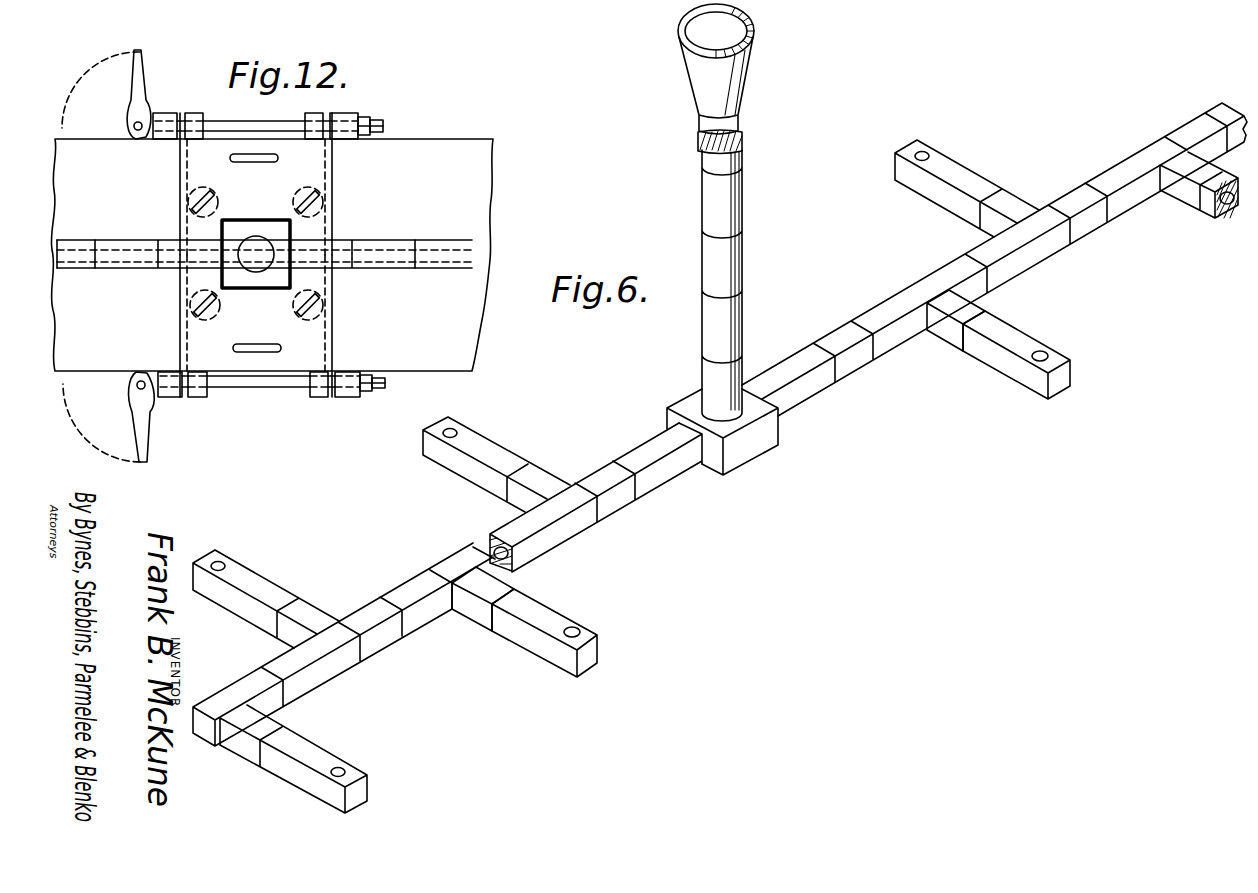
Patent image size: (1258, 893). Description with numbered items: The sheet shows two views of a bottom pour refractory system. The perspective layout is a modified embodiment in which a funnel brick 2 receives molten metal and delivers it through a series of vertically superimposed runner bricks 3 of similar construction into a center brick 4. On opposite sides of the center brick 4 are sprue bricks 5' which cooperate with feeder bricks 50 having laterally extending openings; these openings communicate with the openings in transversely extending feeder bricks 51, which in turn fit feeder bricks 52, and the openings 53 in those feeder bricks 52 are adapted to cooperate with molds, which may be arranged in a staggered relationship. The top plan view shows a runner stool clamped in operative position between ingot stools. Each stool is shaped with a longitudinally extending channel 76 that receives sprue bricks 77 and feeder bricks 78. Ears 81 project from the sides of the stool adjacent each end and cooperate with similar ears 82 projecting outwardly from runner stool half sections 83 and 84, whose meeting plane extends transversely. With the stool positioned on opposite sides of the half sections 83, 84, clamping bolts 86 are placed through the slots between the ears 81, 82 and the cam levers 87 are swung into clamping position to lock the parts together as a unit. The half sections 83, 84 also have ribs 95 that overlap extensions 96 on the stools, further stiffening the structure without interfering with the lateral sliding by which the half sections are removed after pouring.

In FIG. 6, the funnel brick 2 is at (730, 90).
In FIG. 6, the runner bricks 3 is at (740, 240).
In FIG. 6, the center brick 4 is at (759, 440).
In FIG. 6, the sprue bricks 5' is at (720, 424).
In FIG. 6, the feeder bricks 50 is at (560, 513).
In FIG. 6, the transversely extending feeder bricks 51 is at (493, 592).
In FIG. 6, the feeder bricks 52 is at (540, 615).
In FIG. 6, the openings 53 is at (576, 632).
In FIG. 12, the channel 76 is at (112, 240).
In FIG. 12, the sprue bricks 77 is at (350, 245).
In FIG. 12, the feeder bricks 78 is at (433, 240).
In FIG. 12, the ears 81 is at (168, 112).
In FIG. 12, the ears 82 is at (203, 107).
In FIG. 12, the runner stool half section 83 is at (256, 221).
In FIG. 12, the runner stool half section 84 is at (257, 330).
In FIG. 12, the clamping bolts 86 is at (247, 123).
In FIG. 12, the cam levers 87 is at (137, 82).
In FIG. 12, the ribs 95 is at (180, 165).
In FIG. 12, the extensions 96 is at (187, 335).